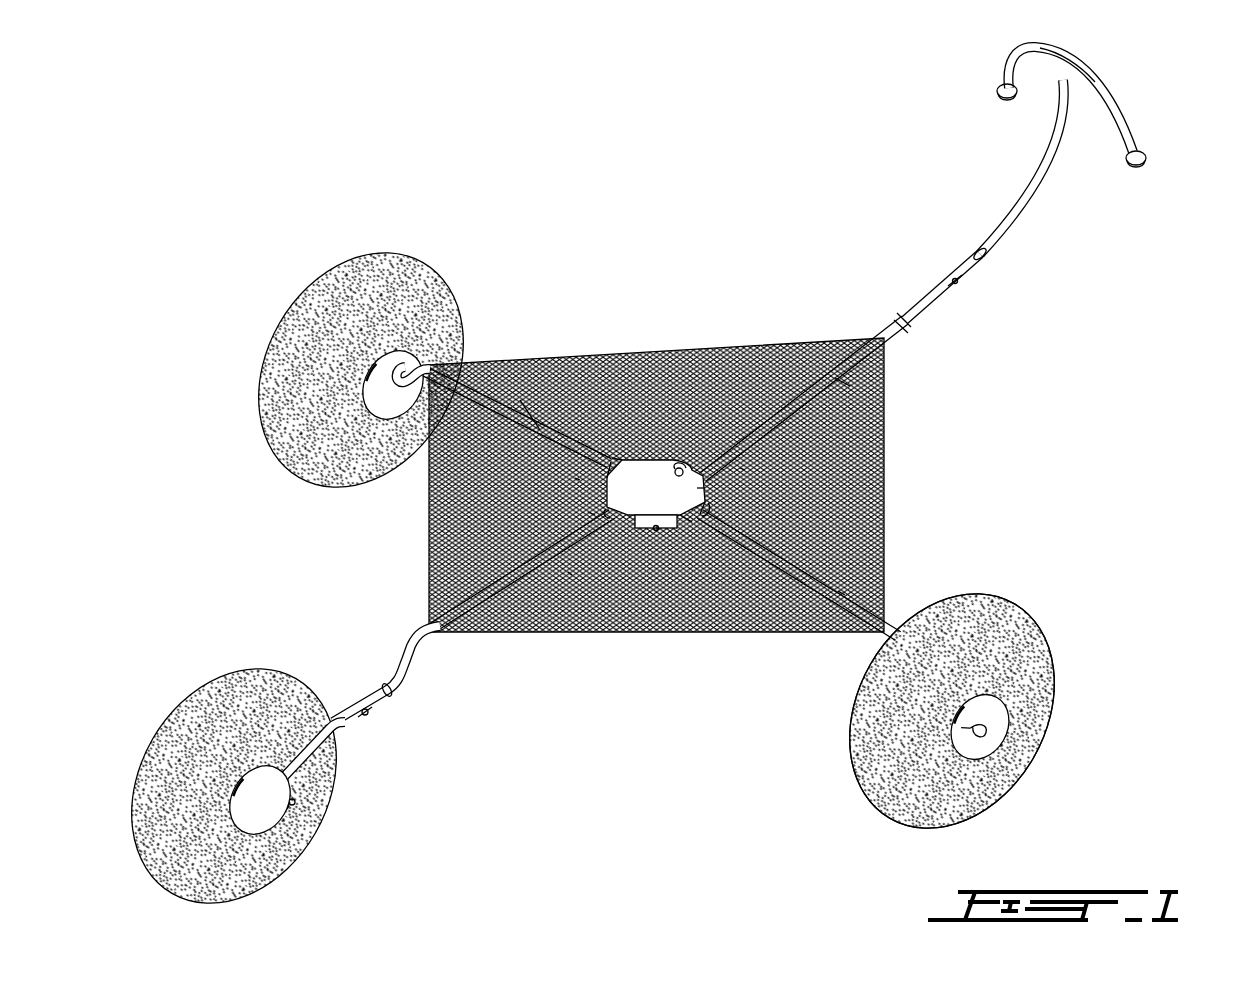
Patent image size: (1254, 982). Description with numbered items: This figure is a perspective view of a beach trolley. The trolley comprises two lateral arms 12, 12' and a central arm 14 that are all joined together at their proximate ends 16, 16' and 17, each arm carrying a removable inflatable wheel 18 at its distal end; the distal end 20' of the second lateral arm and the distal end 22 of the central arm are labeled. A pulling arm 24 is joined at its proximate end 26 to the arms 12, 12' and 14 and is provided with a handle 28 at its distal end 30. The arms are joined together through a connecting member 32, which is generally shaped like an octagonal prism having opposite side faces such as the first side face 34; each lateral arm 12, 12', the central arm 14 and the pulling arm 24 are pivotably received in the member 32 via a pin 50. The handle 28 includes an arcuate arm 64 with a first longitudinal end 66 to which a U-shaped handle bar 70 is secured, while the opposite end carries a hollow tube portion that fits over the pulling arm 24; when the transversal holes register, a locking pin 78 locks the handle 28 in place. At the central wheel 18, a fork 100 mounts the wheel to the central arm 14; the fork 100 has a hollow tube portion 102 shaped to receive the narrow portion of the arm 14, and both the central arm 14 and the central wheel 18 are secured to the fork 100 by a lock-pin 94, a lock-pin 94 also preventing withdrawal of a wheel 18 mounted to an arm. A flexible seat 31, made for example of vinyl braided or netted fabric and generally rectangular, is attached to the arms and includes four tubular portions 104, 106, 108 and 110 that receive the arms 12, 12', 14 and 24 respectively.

The lateral arm 12 is at (841, 575).
The lateral arm 12' is at (516, 364).
The central arm 14 is at (447, 640).
The proximate end 16 is at (699, 619).
The proximate end 16' is at (653, 339).
The proximate end 17 is at (588, 512).
The removable inflatable wheel 18 is at (377, 245).
The distal end 20' is at (295, 388).
The distal end 22 is at (425, 708).
The pulling arm 24 is at (910, 330).
The proximate end 26 is at (684, 466).
The handle 28 is at (1100, 70).
The distal end 30 is at (905, 305).
The flexible seat 31 is at (760, 640).
The connecting member 32 is at (648, 500).
The first side face 34 is at (700, 488).
The pin 50 is at (740, 468).
The arcuate arm 64 is at (1025, 207).
The first longitudinal end 66 is at (1062, 85).
The U-shaped handle bar 70 is at (1138, 120).
The locking pin 78 is at (960, 283).
The lock-pin 94 is at (372, 714).
The fork 100 is at (348, 728).
The hollow tube portion 102 is at (387, 688).
The tubular portion 104 is at (835, 378).
The tubular portion 106 is at (838, 591).
The tubular portion 108 is at (568, 572).
The tubular portion 110 is at (535, 425).